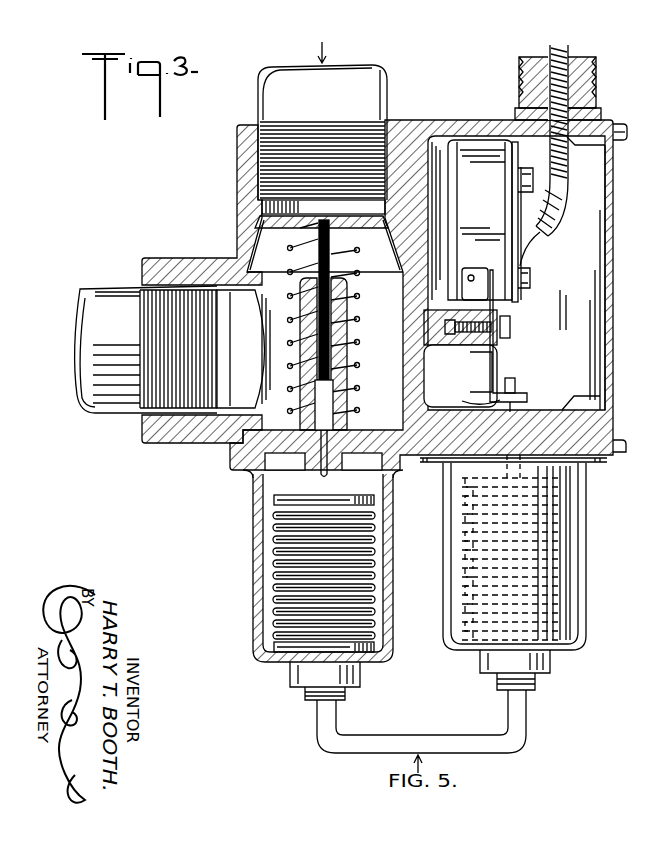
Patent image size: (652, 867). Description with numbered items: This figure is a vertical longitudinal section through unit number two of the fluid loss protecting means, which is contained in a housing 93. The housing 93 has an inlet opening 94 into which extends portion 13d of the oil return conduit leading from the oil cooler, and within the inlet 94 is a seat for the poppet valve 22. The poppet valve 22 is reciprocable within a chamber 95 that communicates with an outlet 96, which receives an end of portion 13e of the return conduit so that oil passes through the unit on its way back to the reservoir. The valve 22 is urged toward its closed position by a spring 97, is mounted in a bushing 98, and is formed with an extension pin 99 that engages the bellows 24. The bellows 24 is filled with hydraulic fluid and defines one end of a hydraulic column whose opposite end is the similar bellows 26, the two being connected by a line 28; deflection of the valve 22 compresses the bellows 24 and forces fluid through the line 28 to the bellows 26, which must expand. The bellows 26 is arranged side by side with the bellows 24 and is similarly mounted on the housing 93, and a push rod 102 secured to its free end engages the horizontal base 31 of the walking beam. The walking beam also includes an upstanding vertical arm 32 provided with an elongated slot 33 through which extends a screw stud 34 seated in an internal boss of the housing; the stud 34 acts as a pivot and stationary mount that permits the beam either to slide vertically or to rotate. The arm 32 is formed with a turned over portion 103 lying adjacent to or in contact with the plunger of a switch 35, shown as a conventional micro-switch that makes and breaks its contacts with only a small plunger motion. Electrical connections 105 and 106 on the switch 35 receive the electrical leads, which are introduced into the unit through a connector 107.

The portion of return conduit 13d is at (388, 74).
The portion of conduit 13e is at (86, 309).
The poppet valve 22 is at (333, 318).
The bellows 24 is at (272, 522).
The bellows 26 is at (600, 522).
The line 28 is at (317, 712).
The horizontal base 31 is at (468, 399).
The vertical arm 32 is at (488, 276).
The longitudinal slot 33 is at (500, 372).
The screw stud 34 is at (504, 334).
The switch 35 is at (486, 203).
The housing 93 is at (241, 144).
The inlet opening 94 is at (268, 208).
The chamber 95 is at (264, 286).
The outlet 96 is at (248, 360).
The spring 97 is at (357, 336).
The bushing 98 is at (357, 345).
The extension pin 99 is at (330, 398).
The push rod 102 is at (514, 386).
The turned over portion 103 is at (472, 358).
The electrical connection 105 is at (527, 180).
The electrical connection 106 is at (528, 282).
The connector 107 is at (594, 66).